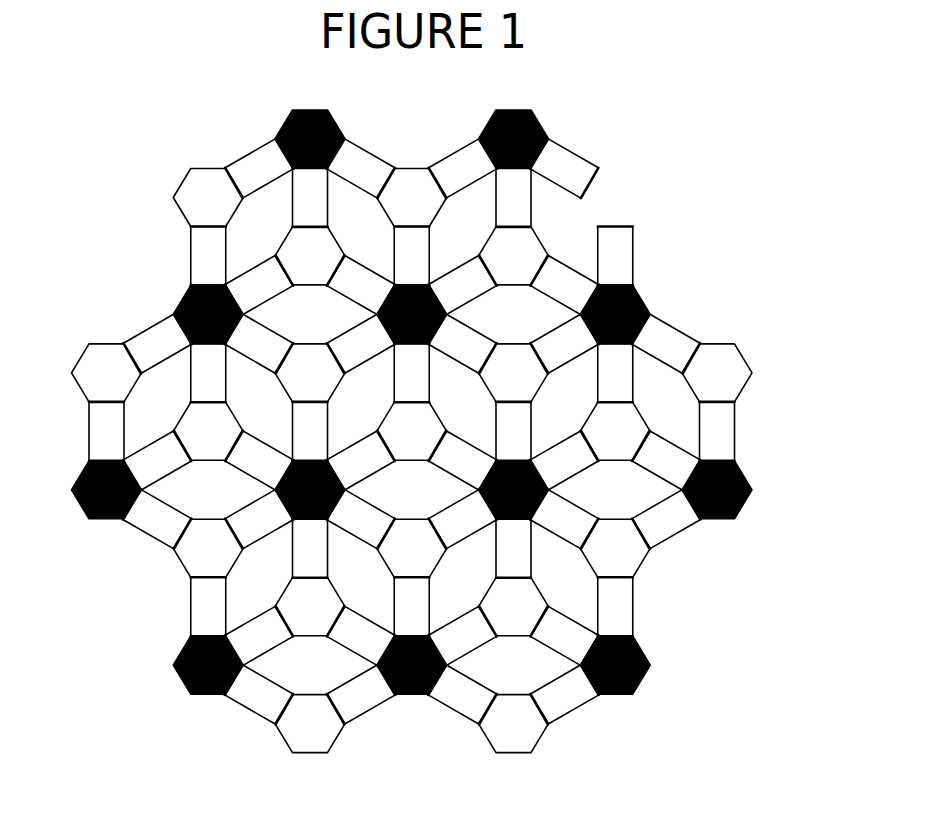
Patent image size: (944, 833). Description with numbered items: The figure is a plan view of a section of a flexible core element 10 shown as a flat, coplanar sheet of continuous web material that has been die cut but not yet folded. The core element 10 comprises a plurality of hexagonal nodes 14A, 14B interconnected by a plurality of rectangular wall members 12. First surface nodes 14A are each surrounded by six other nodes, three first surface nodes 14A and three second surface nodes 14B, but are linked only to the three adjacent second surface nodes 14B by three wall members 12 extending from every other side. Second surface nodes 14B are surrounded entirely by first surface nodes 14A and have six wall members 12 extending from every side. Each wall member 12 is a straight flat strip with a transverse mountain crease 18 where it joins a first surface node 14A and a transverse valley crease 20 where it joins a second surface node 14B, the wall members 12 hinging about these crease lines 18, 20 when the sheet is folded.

The core element 10 is at (703, 158).
The rectangular wall member 12 is at (572, 152).
The first surface node 14A is at (200, 190).
The second surface node 14B is at (188, 298).
The mountain crease 18 is at (733, 401).
The valley crease 20 is at (697, 518).